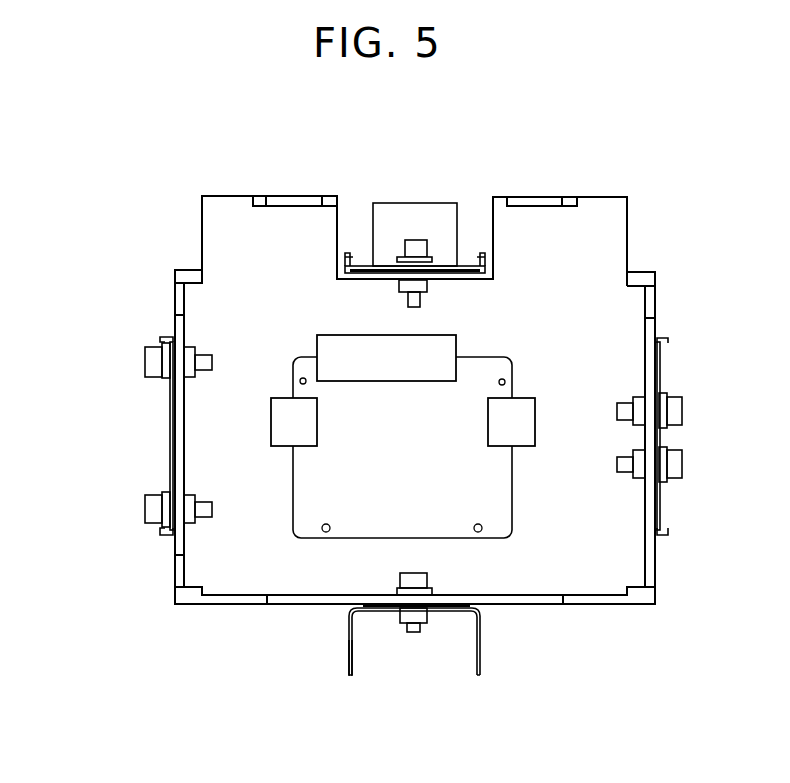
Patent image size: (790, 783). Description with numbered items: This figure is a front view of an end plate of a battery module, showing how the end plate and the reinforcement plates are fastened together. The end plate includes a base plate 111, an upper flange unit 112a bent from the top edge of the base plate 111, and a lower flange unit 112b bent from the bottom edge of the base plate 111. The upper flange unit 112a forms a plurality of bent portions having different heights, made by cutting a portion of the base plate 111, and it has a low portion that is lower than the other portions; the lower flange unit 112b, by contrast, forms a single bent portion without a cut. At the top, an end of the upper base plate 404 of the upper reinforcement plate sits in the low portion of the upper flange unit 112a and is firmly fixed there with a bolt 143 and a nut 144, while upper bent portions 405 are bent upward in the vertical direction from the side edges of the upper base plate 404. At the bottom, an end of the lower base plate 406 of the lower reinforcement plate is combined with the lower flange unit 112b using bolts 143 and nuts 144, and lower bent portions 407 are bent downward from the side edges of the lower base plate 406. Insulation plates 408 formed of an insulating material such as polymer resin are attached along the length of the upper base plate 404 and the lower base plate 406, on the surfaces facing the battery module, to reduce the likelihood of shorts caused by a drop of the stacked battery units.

The base plate 111 is at (215, 433).
The upper flange unit 112a is at (175, 297).
The lower flange unit 112b is at (215, 599).
The bolt 143 is at (417, 245).
The nut 144 is at (409, 286).
The upper base plate 404 is at (469, 263).
The upper bent portion 405 is at (482, 258).
The lower base plate 406 is at (380, 612).
The lower bent portion 407 is at (351, 677).
The insulation plate 408 is at (366, 268).